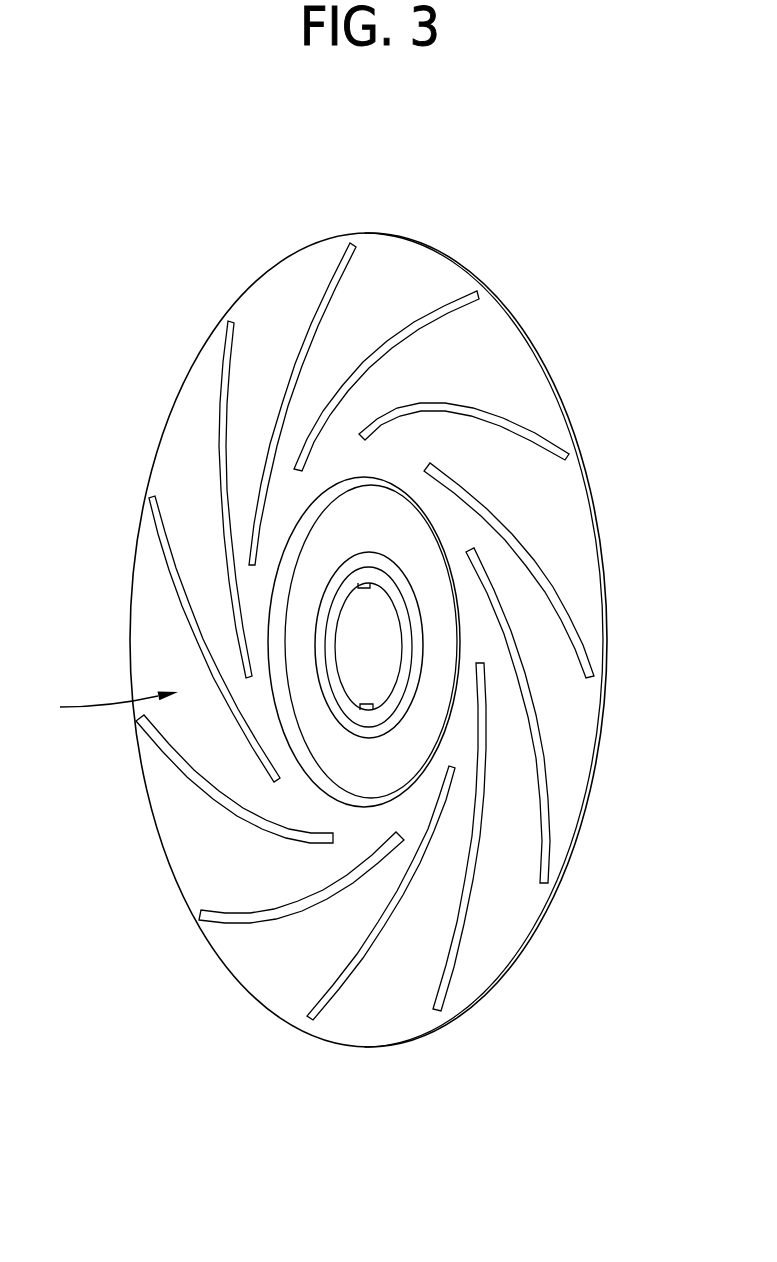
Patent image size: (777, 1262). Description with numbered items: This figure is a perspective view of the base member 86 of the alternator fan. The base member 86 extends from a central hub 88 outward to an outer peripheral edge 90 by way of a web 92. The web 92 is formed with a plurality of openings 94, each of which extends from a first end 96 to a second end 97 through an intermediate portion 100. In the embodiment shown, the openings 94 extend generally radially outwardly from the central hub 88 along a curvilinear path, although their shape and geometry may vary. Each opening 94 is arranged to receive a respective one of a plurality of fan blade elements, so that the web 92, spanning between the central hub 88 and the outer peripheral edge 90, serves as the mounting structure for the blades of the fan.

The base member 86 is at (118, 326).
The central hub 88 is at (323, 640).
The outer peripheral edge 90 is at (478, 1000).
The web 92 is at (265, 966).
The openings 94 is at (104, 707).
The first end 96 is at (280, 778).
The second end 97 is at (156, 500).
The intermediate portion 100 is at (183, 635).